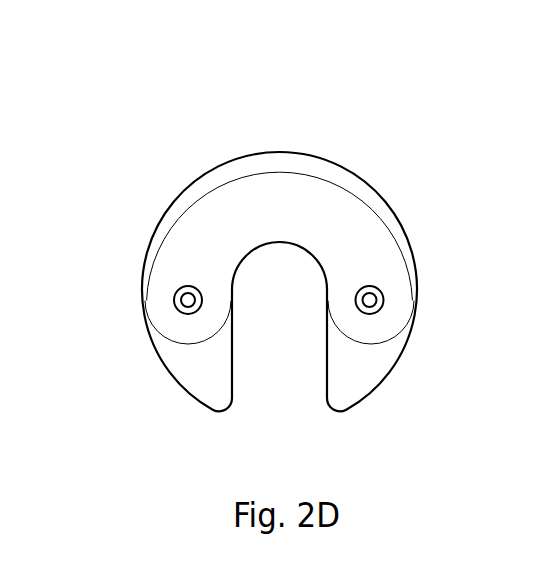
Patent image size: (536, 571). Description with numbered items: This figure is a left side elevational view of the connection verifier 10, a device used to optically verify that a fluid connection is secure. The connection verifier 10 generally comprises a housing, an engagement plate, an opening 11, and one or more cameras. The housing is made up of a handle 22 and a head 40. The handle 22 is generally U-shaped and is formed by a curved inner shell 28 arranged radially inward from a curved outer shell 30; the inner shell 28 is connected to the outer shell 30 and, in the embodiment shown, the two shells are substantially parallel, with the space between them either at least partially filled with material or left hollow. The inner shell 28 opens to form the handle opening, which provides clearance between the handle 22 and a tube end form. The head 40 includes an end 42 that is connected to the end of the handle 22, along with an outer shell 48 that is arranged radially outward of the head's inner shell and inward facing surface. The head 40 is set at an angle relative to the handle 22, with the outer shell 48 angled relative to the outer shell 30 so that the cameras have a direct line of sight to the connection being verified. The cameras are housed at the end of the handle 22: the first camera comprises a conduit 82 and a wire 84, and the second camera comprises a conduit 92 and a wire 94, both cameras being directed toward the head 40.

The connection verifier 10 is at (100, 72).
The opening 11 is at (284, 375).
The handle 22 is at (202, 208).
The inner shell 28 is at (277, 243).
The outer shell 30 is at (237, 163).
The head 40 is at (267, 160).
The end 42 is at (300, 157).
The outer shell 48 is at (333, 162).
The conduit 82 is at (383, 292).
The wire 84 is at (377, 302).
The conduit 92 is at (174, 300).
The wire 94 is at (183, 308).